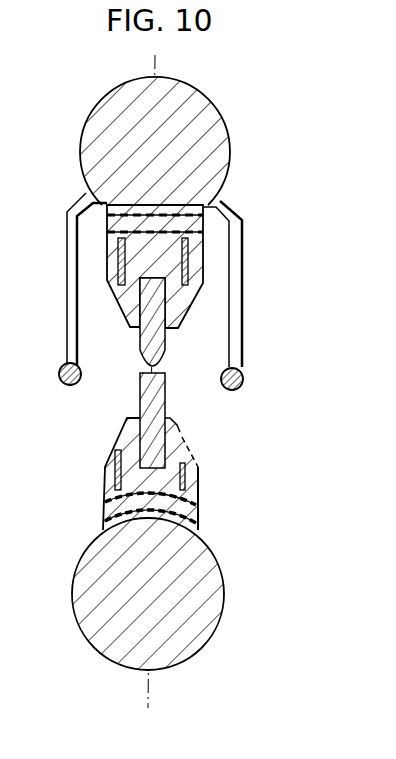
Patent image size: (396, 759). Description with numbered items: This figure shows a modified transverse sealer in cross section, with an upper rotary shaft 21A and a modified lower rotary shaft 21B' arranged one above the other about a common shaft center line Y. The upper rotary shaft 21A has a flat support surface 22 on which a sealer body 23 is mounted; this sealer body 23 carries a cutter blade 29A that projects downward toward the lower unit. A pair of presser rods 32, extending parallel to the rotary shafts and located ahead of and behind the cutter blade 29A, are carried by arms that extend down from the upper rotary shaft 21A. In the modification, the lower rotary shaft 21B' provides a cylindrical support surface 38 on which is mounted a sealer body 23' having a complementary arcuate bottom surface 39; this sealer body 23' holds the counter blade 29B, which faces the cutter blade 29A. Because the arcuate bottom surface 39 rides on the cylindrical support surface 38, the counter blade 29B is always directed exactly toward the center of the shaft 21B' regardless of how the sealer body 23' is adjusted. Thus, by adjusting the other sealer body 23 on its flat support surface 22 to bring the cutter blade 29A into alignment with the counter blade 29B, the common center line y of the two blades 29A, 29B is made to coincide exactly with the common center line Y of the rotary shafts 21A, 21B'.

The rotary shaft 21A is at (207, 110).
The common shaft center line Y is at (155, 163).
The flat support surface 22 is at (77, 232).
The sealer body 23 is at (200, 266).
The cutter blade 29A is at (141, 342).
The presser rod 32 is at (59, 378).
The common center line of the blades y is at (140, 398).
The counter blade 29B is at (165, 400).
The sealer body 23' is at (182, 474).
The cylindrical support surface 38 is at (102, 532).
The arcuate bottom surface 39 is at (168, 517).
The rotary shaft 21B' is at (186, 594).